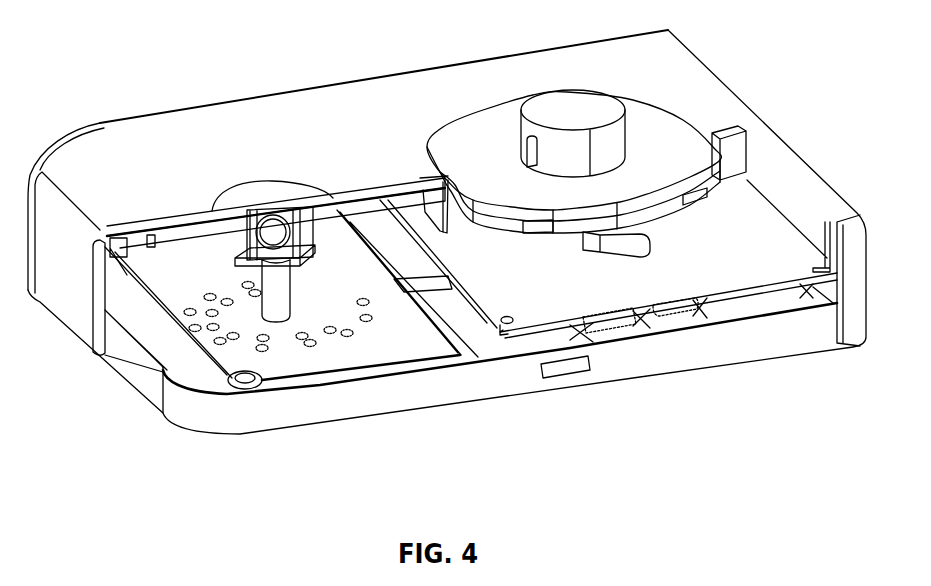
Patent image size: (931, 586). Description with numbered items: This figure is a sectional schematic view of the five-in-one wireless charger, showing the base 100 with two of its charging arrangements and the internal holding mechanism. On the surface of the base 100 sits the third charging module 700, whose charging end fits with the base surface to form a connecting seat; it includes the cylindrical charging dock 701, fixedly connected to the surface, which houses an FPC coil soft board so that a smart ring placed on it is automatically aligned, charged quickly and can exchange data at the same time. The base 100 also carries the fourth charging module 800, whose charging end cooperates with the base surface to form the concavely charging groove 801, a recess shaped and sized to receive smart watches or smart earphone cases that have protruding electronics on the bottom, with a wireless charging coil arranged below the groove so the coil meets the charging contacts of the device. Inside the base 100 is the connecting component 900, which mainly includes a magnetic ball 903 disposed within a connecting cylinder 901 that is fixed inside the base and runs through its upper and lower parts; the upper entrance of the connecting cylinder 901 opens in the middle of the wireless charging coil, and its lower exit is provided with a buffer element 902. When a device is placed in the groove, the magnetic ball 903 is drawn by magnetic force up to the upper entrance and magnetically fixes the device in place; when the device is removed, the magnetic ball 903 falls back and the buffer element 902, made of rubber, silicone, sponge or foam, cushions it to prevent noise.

The base 100 is at (688, 67).
The third charging module 700 is at (493, 98).
The cylindrical charging dock 701 is at (595, 101).
The fourth charging module 800 is at (250, 143).
The concavely charging groove 801 is at (230, 193).
The connecting component 900 is at (345, 322).
The connecting cylinder 901 is at (238, 260).
The buffer element 902 is at (302, 258).
The magnetic ball 903 is at (304, 187).